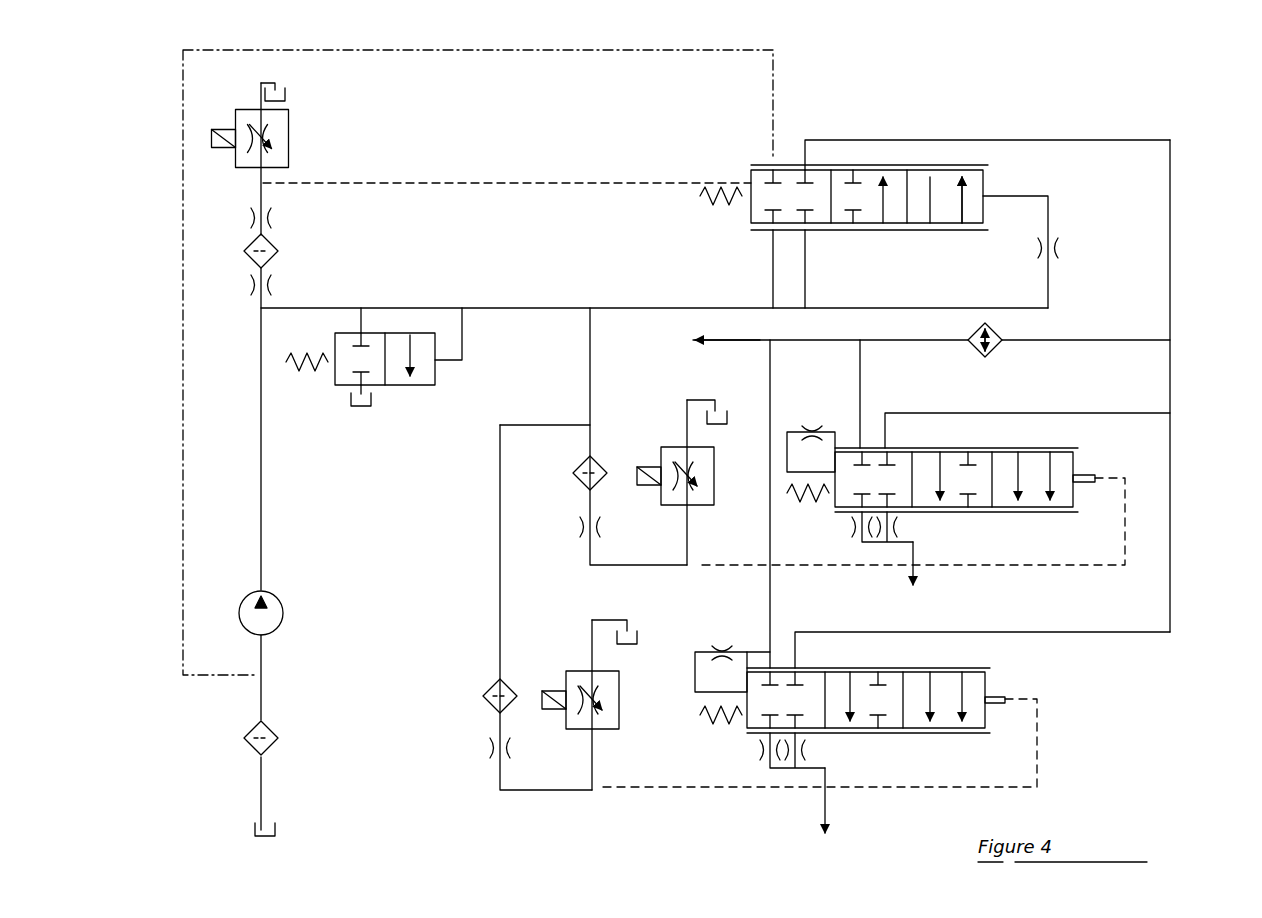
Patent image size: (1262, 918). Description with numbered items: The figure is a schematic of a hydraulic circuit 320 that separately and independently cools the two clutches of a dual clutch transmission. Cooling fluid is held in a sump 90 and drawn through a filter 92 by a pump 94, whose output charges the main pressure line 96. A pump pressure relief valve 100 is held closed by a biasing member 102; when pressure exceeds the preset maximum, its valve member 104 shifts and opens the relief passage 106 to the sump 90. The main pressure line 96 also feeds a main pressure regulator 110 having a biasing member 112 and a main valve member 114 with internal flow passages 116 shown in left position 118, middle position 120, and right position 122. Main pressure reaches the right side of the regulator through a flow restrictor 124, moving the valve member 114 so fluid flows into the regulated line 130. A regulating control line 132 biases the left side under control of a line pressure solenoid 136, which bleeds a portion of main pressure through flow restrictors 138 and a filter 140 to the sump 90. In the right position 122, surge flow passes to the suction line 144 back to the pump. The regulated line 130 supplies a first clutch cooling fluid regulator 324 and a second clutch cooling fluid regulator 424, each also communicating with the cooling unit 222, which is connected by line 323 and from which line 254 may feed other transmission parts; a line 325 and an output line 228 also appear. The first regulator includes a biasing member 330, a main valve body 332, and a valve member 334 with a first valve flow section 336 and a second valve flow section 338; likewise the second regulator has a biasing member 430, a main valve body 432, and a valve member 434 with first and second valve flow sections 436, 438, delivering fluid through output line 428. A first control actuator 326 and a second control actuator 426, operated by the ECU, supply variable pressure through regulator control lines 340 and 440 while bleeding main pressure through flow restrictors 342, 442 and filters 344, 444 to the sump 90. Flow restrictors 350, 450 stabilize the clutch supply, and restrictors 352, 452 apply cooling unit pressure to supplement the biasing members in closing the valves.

The sump 90 is at (245, 825).
The filter 92 is at (250, 730).
The pump 94 is at (280, 600).
The main pressure line 96 is at (500, 308).
The pump pressure relief valve 100 is at (430, 385).
The biasing member 102 is at (305, 375).
The valve member 104 is at (435, 365).
The relief passage 106 is at (361, 305).
The main pressure regulator 110 is at (869, 190).
The biasing member 112 is at (722, 210).
The main valve member 114 is at (988, 180).
The internal flow passages 116 is at (980, 238).
The left position 118 is at (810, 225).
The middle position 120 is at (865, 230).
The right position 122 is at (905, 230).
The flow restrictor 124 is at (1062, 252).
The regulated line 130 is at (1170, 236).
The regulating control line 132 is at (540, 183).
The line pressure solenoid 136 is at (290, 137).
The flow restrictors 138 is at (272, 285).
The filter 140 is at (275, 250).
The suction line 144 is at (738, 50).
The cooling unit 222 is at (962, 348).
The clutch output line 228 is at (920, 575).
The line 254 is at (690, 345).
The hydraulic circuit 320 is at (1008, 108).
The pressure line 323 is at (1048, 341).
The first clutch cooling fluid regulator 324 is at (1032, 483).
The pilot line 325 is at (885, 410).
The first control actuator 326 is at (700, 505).
The biasing member 330 is at (825, 505).
The main valve body 332 is at (950, 452).
The valve member 334 is at (1107, 455).
The first valve flow section 336 is at (950, 512).
The second valve flow section 338 is at (1035, 512).
The regulator control line 340 is at (1045, 567).
The flow restrictors 342 is at (580, 530).
The filters 344 is at (578, 480).
The flow restrictors 350 is at (898, 527).
The restrictor 352 is at (815, 428).
The second clutch cooling fluid regulator 424 is at (958, 555).
The second control actuator 426 is at (612, 730).
The output line 428 is at (832, 820).
The biasing member 430 is at (730, 725).
The main valve body 432 is at (865, 672).
The valve member 434 is at (990, 682).
The first valve flow section 436 is at (865, 733).
The second valve flow section 438 is at (945, 733).
The regulator control line 440 is at (628, 790).
The flow restrictors 442 is at (490, 750).
The filters 444 is at (488, 700).
The flow restrictors 450 is at (806, 752).
The restrictor 452 is at (722, 648).